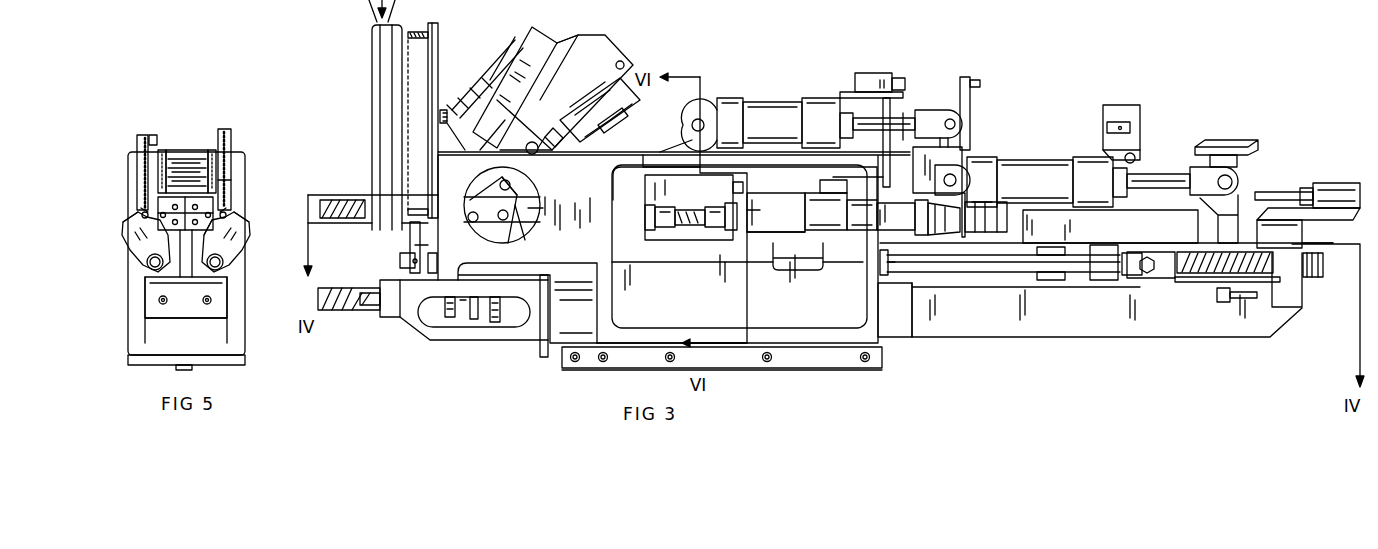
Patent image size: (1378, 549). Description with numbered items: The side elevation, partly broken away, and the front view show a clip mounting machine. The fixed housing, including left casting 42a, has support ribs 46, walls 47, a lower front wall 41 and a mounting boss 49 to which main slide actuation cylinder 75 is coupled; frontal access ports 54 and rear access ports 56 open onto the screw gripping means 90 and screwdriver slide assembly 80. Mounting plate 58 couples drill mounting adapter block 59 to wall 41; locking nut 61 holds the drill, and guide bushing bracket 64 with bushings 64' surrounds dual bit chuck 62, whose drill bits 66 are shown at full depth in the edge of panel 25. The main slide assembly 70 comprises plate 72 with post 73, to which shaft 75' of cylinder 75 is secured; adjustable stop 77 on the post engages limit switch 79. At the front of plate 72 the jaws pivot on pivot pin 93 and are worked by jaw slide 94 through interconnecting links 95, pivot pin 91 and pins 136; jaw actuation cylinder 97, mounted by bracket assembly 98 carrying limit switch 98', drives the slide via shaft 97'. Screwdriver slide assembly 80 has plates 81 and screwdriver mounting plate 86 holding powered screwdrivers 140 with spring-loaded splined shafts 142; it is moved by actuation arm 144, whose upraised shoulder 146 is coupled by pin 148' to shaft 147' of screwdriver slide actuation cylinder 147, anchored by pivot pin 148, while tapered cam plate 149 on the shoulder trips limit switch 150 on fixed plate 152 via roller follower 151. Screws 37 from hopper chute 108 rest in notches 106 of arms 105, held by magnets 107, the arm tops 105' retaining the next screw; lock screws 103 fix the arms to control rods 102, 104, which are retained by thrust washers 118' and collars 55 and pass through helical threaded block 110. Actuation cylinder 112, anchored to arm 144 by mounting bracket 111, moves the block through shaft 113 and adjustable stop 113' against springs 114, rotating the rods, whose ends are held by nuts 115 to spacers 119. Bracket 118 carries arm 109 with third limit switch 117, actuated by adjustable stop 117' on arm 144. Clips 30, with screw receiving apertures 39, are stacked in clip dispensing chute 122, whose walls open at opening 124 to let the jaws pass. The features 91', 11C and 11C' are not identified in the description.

In FIG. 3, the support plate 25 is at (330, 200).
In FIG. 5, the terminal strip 30 is at (184, 146).
In FIG. 5, the guide bracket 37 is at (142, 210).
In FIG. 3, the guide bracket 37 is at (410, 225).
In FIG. 5, the guide rail 39 is at (163, 150).
In FIG. 3, the slide block 41 is at (596, 312).
In FIG. 3, the housing 42a is at (598, 172).
In FIG. 3, the frame 46 is at (612, 281).
In FIG. 3, the frame plate 47 is at (660, 320).
In FIG. 3, the clevis 49 is at (682, 130).
In FIG. 3, the cam plate 54 is at (539, 200).
In FIG. 3, the nut 55 is at (408, 269).
In FIG. 3, the drive shaft 56 is at (687, 242).
In FIG. 3, the base plate 58 is at (830, 370).
In FIG. 3, the mounting plate 59 is at (562, 362).
In FIG. 3, the end plate 61 is at (540, 346).
In FIG. 3, the pin 62 is at (498, 322).
In FIG. 3, the arm 64 is at (464, 324).
In FIG. 3, the arm block 64' is at (371, 291).
In FIG. 5, the shaft 66 is at (160, 300).
In FIG. 3, the shaft 66 is at (347, 311).
In FIG. 3, the support 70 is at (921, 146).
In FIG. 3, the coupling 72 is at (945, 240).
In FIG. 3, the mounting block 73 is at (952, 110).
In FIG. 3, the cylinder 75 is at (816, 96).
In FIG. 3, the piston rod 75' is at (912, 85).
In FIG. 3, the plate 77 is at (972, 77).
In FIG. 3, the bracket 79 is at (873, 73).
In FIG. 3, the spindle 80 is at (758, 246).
In FIG. 3, the gear box 81 is at (752, 196).
In FIG. 3, the bracket 86 is at (733, 188).
In FIG. 3, the disc 90 is at (530, 180).
In FIG. 3, the pin 91 is at (496, 236).
In FIG. 3, the threaded rod 91' is at (481, 95).
In FIG. 3, the pin 93 is at (468, 220).
In FIG. 3, the slot 94 is at (530, 208).
In FIG. 3, the guide 95 is at (510, 215).
In FIG. 3, the motor 97 is at (604, 110).
In FIG. 3, the motor mount 97' is at (561, 141).
In FIG. 3, the housing 98 is at (570, 86).
In FIG. 3, the cylinder 98' is at (515, 76).
In FIG. 5, the shaft 102 is at (225, 270).
In FIG. 3, the shaft 102 is at (805, 263).
In FIG. 5, the roller 103 is at (148, 268).
In FIG. 3, the roller 103 is at (414, 264).
In FIG. 5, the roller 104 is at (147, 262).
In FIG. 5, the arm 105 is at (190, 242).
In FIG. 3, the arm 105 is at (378, 256).
In FIG. 5, the arm tip 105' is at (188, 219).
In FIG. 5, the pivot 106 is at (230, 240).
In FIG. 5, the pin 107 is at (143, 215).
In FIG. 5, the guide plate 108 is at (139, 135).
In FIG. 3, the guide plate 108 is at (431, 36).
In FIG. 3, the plate 109 is at (1287, 208).
In FIG. 3, the clamp 110 is at (1118, 280).
In FIG. 3, the clamp 111 is at (1092, 280).
In FIG. 3, the stop 112 is at (1043, 247).
In FIG. 3, the rod 113 is at (1229, 322).
In FIG. 3, the nut block 113' is at (1157, 284).
In FIG. 3, the spring 114 is at (1240, 275).
In FIG. 3, the knurled nut 115 is at (1313, 278).
In FIG. 3, the cylinder 117 is at (1309, 176).
In FIG. 3, the block 117' is at (1198, 219).
In FIG. 3, the housing 118 is at (1106, 310).
In FIG. 3, the bolt 118' is at (829, 318).
In FIG. 3, the block 119 is at (1290, 308).
In FIG. 5, the clip 122 is at (153, 135).
In FIG. 5, the guide 124 is at (228, 195).
In FIG. 3, the pin 136 is at (500, 185).
In FIG. 3, the gear housing 140 is at (756, 221).
In FIG. 3, the adjusting screw 142 is at (680, 207).
In FIG. 3, the housing 144 is at (1130, 233).
In FIG. 3, the handle 146 is at (1232, 140).
In FIG. 3, the cylinder 147 is at (1047, 162).
In FIG. 3, the piston rod 147' is at (1158, 164).
In FIG. 3, the pivot 148 is at (984, 180).
In FIG. 3, the clevis 148' is at (1237, 181).
In FIG. 3, the stem 149 is at (1213, 155).
In FIG. 3, the switch 150 is at (1121, 124).
In FIG. 3, the roller 151 is at (1133, 153).
In FIG. 3, the switch box 152 is at (1108, 105).
In FIG. 3, the cable 11C is at (1279, 237).
In FIG. 3, the cable 11C' is at (1330, 299).